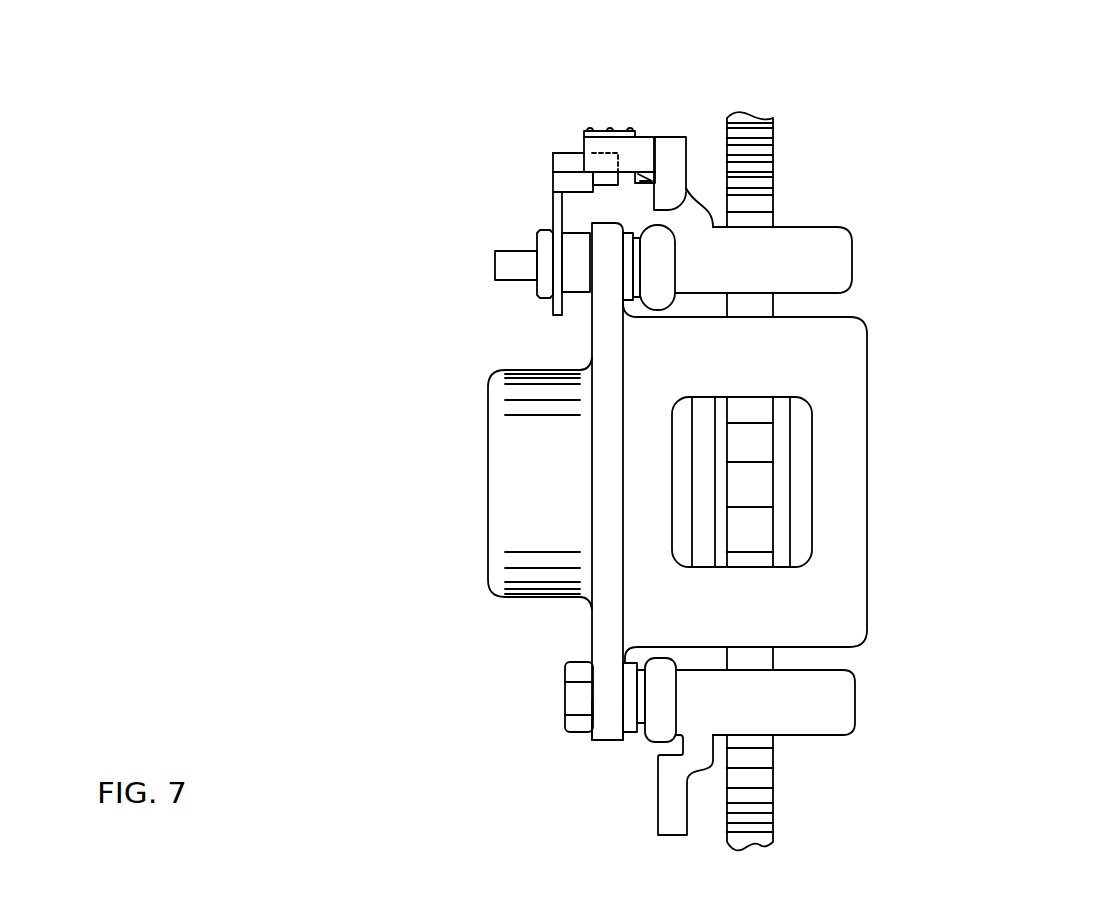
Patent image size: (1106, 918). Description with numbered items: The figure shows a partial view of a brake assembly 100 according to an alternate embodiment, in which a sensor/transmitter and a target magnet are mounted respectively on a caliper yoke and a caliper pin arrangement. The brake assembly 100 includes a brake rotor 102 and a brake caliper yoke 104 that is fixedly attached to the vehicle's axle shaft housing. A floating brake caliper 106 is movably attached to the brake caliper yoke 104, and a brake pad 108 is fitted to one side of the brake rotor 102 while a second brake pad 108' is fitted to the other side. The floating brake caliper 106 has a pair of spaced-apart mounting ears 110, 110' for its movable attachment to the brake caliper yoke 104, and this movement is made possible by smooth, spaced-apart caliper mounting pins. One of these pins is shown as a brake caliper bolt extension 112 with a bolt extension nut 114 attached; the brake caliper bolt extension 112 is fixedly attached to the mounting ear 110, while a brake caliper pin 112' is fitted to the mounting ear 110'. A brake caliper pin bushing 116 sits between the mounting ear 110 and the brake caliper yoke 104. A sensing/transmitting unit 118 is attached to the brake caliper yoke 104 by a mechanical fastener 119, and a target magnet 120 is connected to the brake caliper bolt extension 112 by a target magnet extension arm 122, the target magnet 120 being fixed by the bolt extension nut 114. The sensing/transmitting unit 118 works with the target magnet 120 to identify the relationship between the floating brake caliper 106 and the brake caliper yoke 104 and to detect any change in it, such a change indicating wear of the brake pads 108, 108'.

The brake assembly 100 is at (1004, 180).
The brake rotor 102 is at (757, 803).
The brake caliper yoke 104 is at (833, 278).
The floating brake caliper 106 is at (843, 625).
The brake pad 108 is at (823, 473).
The brake pad 108' is at (828, 482).
The mounting ear 110 is at (504, 481).
The mounting ear 110' is at (566, 759).
The brake caliper bolt extension 112 is at (485, 223).
The brake caliper pin 112' is at (614, 766).
The bolt extension nut 114 is at (543, 283).
The brake caliper pin bushing 116 is at (661, 243).
The sensing/transmitting unit 118 is at (638, 152).
The mechanical fastener 119 is at (638, 177).
The target magnet 120 is at (565, 163).
The target magnet extension arm 122 is at (555, 218).